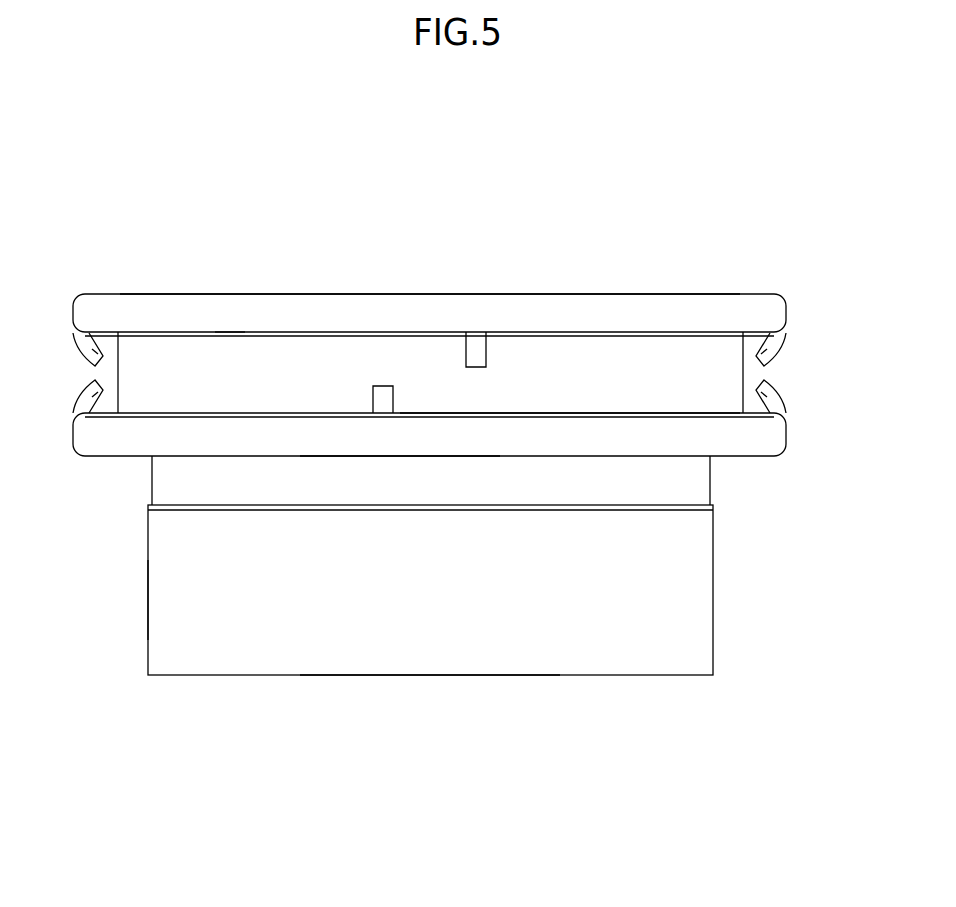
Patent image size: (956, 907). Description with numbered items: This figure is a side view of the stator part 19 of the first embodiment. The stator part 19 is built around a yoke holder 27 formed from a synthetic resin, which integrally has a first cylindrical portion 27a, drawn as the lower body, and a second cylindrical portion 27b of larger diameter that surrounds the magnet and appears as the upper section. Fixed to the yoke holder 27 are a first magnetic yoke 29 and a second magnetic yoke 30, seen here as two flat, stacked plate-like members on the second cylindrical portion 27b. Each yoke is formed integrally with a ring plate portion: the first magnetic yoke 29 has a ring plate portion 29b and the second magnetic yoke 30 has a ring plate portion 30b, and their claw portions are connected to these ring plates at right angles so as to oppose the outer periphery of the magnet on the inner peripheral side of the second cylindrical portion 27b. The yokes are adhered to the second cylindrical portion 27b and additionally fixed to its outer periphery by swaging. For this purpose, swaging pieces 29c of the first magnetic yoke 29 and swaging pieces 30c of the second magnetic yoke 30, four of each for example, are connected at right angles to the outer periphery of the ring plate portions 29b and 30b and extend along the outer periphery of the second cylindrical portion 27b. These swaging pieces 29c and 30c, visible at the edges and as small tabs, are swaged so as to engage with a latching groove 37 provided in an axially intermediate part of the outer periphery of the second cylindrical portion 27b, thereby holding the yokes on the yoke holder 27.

The stator part 19 is at (135, 597).
The yoke holder 27 is at (713, 583).
The first cylindrical portion 27a is at (433, 660).
The second cylindrical portion 27b is at (615, 413).
The first magnetic yoke 29 is at (470, 458).
The ring plate portion 29b is at (400, 442).
The swaging pieces 29c is at (390, 386).
The second magnetic yoke 30 is at (403, 293).
The ring plate portion 30b is at (259, 302).
The swaging pieces 30c is at (103, 357).
The latching groove 37 is at (237, 338).